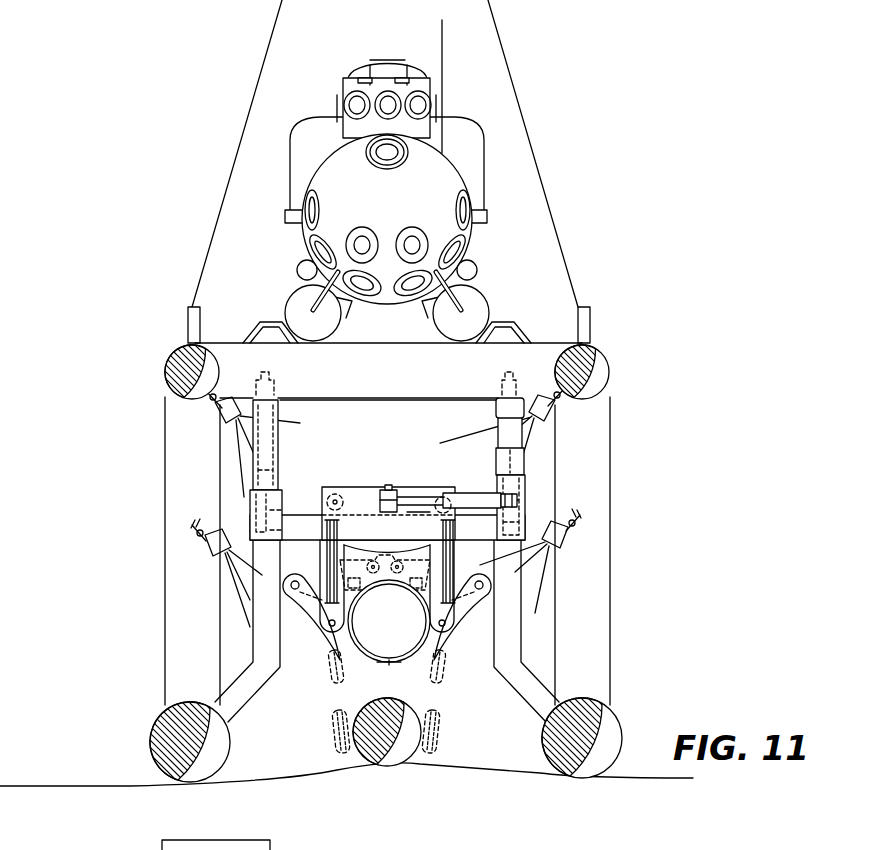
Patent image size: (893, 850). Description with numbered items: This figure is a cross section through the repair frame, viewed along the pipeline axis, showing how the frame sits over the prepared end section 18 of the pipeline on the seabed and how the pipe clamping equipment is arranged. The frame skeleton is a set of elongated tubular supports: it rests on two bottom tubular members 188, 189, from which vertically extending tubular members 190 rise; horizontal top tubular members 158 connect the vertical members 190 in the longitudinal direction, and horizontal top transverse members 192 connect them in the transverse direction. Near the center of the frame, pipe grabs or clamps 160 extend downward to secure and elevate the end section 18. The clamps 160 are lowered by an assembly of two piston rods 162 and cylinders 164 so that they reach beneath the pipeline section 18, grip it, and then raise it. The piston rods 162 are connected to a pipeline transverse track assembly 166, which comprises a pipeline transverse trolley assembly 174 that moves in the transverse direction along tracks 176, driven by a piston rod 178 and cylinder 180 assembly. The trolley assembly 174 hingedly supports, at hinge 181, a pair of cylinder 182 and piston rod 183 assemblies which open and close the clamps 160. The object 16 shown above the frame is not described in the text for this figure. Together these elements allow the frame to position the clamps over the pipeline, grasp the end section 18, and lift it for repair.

The submersible sphere / diving chamber 16 is at (478, 248).
The prepared end section 18 is at (401, 767).
The horizontal top tubular members 158 is at (168, 366).
The pipe clamps 160 is at (335, 640).
The piston rods 162 is at (275, 497).
The cylinders 164 is at (272, 456).
The pipeline transverse track assembly 166 is at (346, 485).
The pipeline transverse trolley assembly 174 is at (393, 517).
The tracks 176 is at (300, 530).
The piston rod 178 is at (412, 490).
The cylinder 180 is at (465, 491).
The hinge 181 is at (424, 510).
The cylinder 182 is at (412, 594).
The piston rod 183 is at (390, 617).
The tubular member 188 is at (229, 753).
The tubular member 189 is at (620, 732).
The vertically extending tubular members 190 is at (165, 525).
The horizontal top transverse members 192 is at (420, 398).